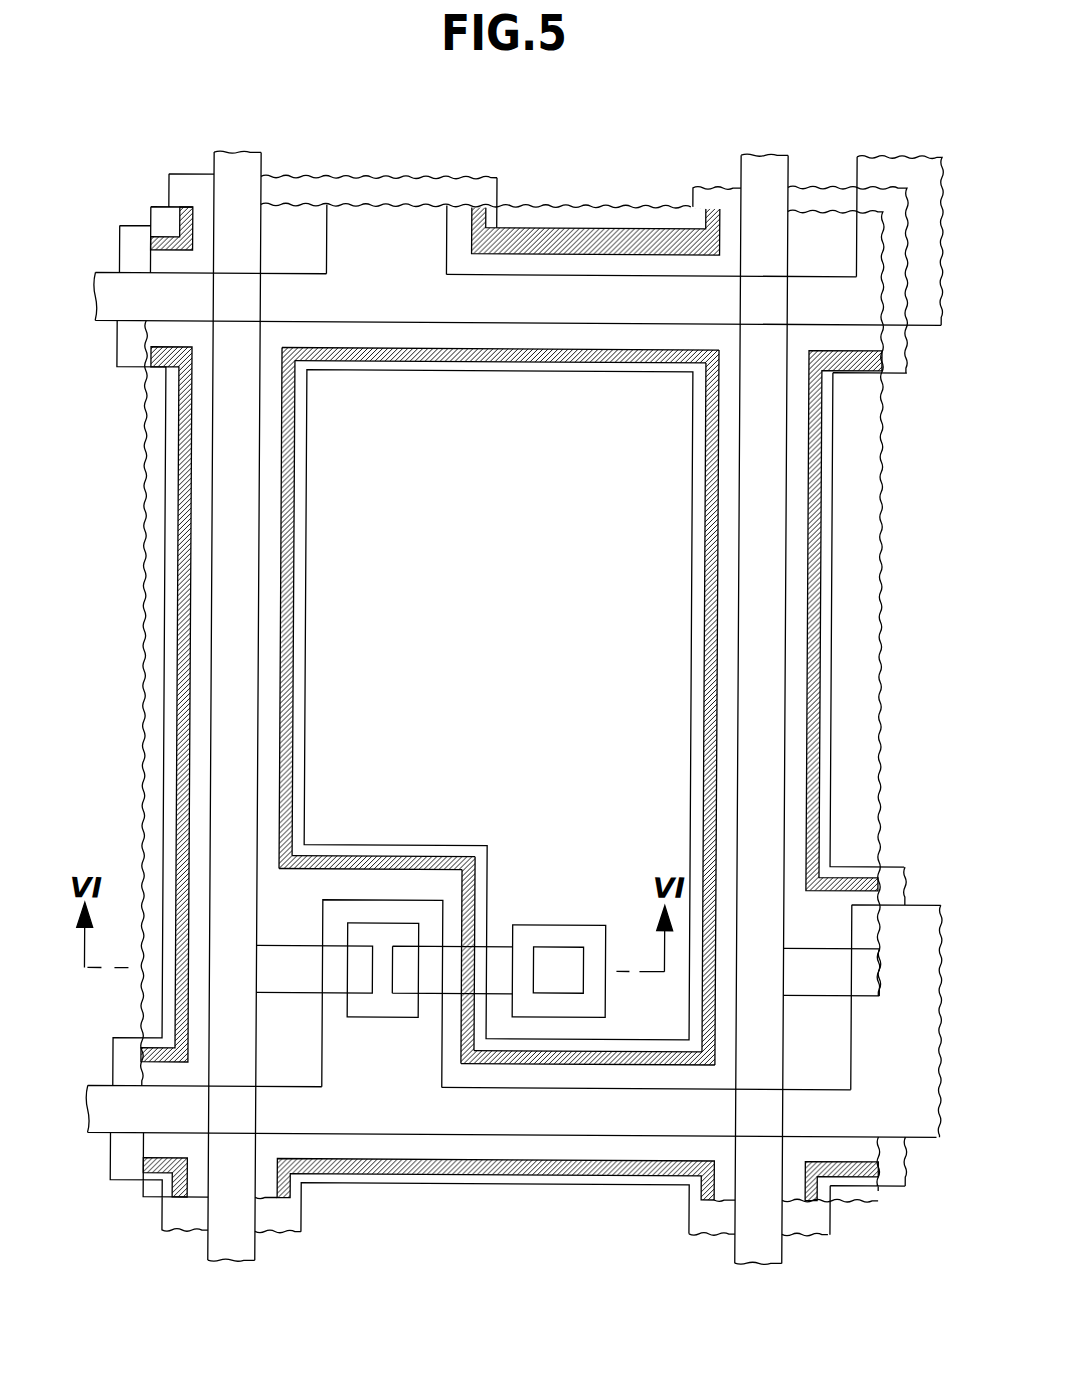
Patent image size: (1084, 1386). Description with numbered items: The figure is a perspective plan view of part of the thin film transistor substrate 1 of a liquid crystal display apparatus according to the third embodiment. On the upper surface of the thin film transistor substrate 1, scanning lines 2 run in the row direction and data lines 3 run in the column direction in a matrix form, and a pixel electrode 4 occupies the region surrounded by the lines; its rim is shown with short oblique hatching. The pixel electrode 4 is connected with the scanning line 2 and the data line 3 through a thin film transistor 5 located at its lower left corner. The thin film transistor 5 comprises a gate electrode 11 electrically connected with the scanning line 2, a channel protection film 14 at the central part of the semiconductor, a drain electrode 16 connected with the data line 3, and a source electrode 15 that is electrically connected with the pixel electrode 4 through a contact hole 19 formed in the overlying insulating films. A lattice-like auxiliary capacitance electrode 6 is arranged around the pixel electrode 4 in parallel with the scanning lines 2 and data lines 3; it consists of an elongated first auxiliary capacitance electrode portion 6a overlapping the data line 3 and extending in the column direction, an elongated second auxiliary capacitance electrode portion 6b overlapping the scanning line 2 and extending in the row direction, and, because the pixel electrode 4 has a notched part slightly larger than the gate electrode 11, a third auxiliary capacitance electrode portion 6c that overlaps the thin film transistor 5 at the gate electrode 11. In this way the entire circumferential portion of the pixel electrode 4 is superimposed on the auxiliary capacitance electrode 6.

The thin film transistor substrate 1 is at (606, 186).
The scanning line 2 is at (108, 310).
The data line 3 is at (233, 185).
The pixel electrode 4 is at (605, 731).
The thin film transistor 5 is at (436, 935).
The auxiliary capacitance electrode 6 is at (188, 197).
The first auxiliary capacitance electrode portion 6a is at (300, 626).
The second auxiliary capacitance electrode portion 6b is at (527, 362).
The third auxiliary capacitance electrode portion 6c is at (476, 891).
The gate electrode 11 is at (381, 914).
The channel protection film 14 is at (380, 1002).
The source electrode 15 is at (552, 931).
The drain electrode 16 is at (289, 969).
The contact hole 19 is at (572, 969).